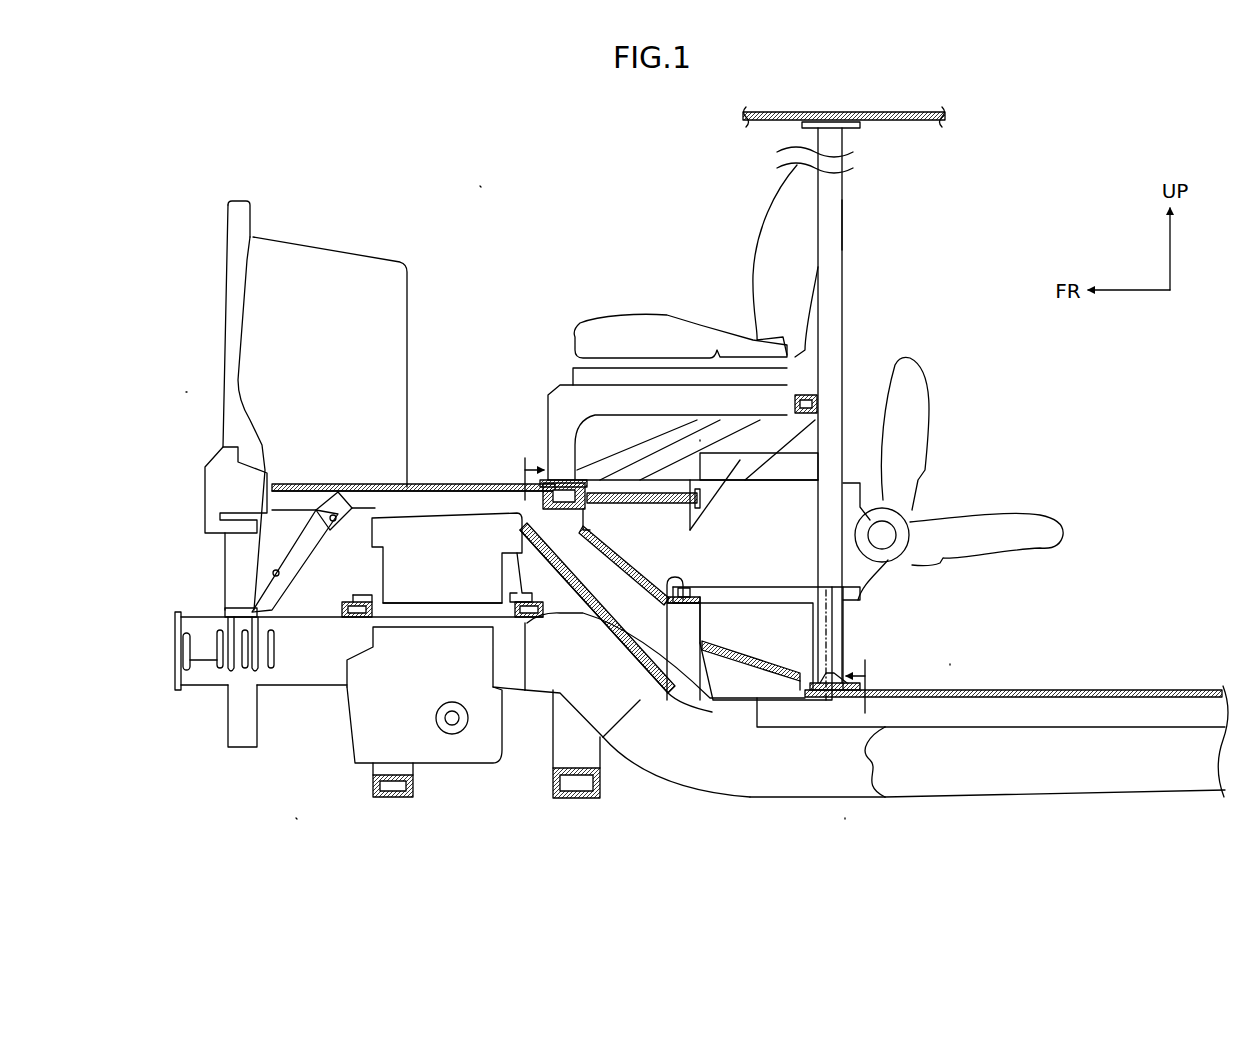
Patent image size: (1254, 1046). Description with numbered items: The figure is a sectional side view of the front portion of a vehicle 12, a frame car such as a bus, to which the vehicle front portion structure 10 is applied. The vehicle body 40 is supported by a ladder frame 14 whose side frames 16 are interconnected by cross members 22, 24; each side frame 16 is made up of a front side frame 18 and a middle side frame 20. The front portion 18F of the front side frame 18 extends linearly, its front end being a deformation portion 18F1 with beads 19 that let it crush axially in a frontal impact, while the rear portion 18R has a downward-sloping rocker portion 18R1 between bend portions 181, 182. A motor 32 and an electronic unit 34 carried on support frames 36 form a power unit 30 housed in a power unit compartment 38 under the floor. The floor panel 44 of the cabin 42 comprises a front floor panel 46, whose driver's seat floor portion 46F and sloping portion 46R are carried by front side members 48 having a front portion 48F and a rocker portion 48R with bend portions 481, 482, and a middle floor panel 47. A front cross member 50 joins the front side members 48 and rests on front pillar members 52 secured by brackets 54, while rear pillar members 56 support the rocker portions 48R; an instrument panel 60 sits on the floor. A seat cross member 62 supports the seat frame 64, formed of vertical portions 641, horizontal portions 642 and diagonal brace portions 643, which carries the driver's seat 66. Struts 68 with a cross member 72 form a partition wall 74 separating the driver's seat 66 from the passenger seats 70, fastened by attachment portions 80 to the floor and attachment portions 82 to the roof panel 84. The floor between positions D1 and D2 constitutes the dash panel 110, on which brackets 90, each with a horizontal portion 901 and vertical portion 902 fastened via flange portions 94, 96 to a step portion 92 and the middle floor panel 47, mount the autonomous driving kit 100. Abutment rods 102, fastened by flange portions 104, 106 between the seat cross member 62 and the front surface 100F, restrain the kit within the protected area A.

The vehicle front portion structure 10 is at (297, 820).
The vehicle 12 is at (480, 184).
The ladder frame 14 is at (845, 820).
The side frame 16 is at (951, 800).
The front side frame 18 is at (528, 692).
The front portion of front side frame 18F is at (325, 690).
The deformation portion 18F1 is at (196, 688).
The rear portion of front side frame 18R is at (760, 800).
The rocker portion 18R1 is at (648, 760).
The bead 19 is at (183, 658).
The middle side frame 20 is at (1090, 792).
The cross member 22 is at (393, 800).
The cross member 24 is at (577, 800).
The power unit 30 is at (442, 723).
The motor 32 is at (460, 768).
The electronic unit 34 is at (397, 524).
The support frame 36 is at (512, 588).
The power unit compartment 38 is at (375, 562).
The vehicle body 40 is at (185, 392).
The cabin 42 is at (932, 254).
The floor panel 44 is at (950, 663).
The front floor panel 46 is at (497, 478).
The driver's seat floor portion 46F is at (460, 484).
The sloping portion 46R is at (760, 676).
The middle floor panel 47 is at (1078, 688).
The front side member 48 is at (622, 648).
The front portion of front side member 48F is at (430, 498).
The rocker portion of front side member 48R is at (657, 678).
The front cross member 50 is at (280, 470).
The front pillar member 52 is at (225, 570).
The bracket 54 is at (232, 612).
The rear pillar member 56 is at (600, 556).
The instrument panel 60 is at (338, 246).
The seat cross member 62 is at (548, 502).
The seat frame 64 is at (767, 422).
The driver's seat 66 is at (655, 318).
The strut 68 is at (850, 342).
The passenger seat 70 is at (990, 520).
The cross member 72 is at (820, 426).
The partition wall 74 is at (848, 223).
The attachment portion 80 is at (870, 683).
The attachment portion 82 is at (853, 130).
The roof panel 84 is at (920, 124).
The bracket 90 is at (769, 586).
The step portion 92 is at (706, 646).
The flange portion 94 is at (668, 610).
The flange portion 96 is at (826, 700).
The autonomous driving kit 100 is at (866, 468).
The front surface 100F is at (700, 478).
The abutment rod 102 is at (692, 530).
The flange portion 104 is at (575, 476).
The flange portion 106 is at (688, 512).
The dash panel 110 is at (625, 622).
The bend portion 181 is at (663, 592).
The bend portion 182 is at (724, 780).
The bend portion 481 is at (585, 527).
The bend portion 482 is at (712, 712).
The vertical portion 641 is at (546, 482).
The horizontal portion 642 is at (752, 416).
The diagonal brace portion 643 is at (627, 435).
The horizontal portion 901 is at (715, 603).
The vertical portion 902 is at (836, 630).
The area A is at (700, 440).
The position D1 is at (530, 466).
The position D2 is at (863, 677).